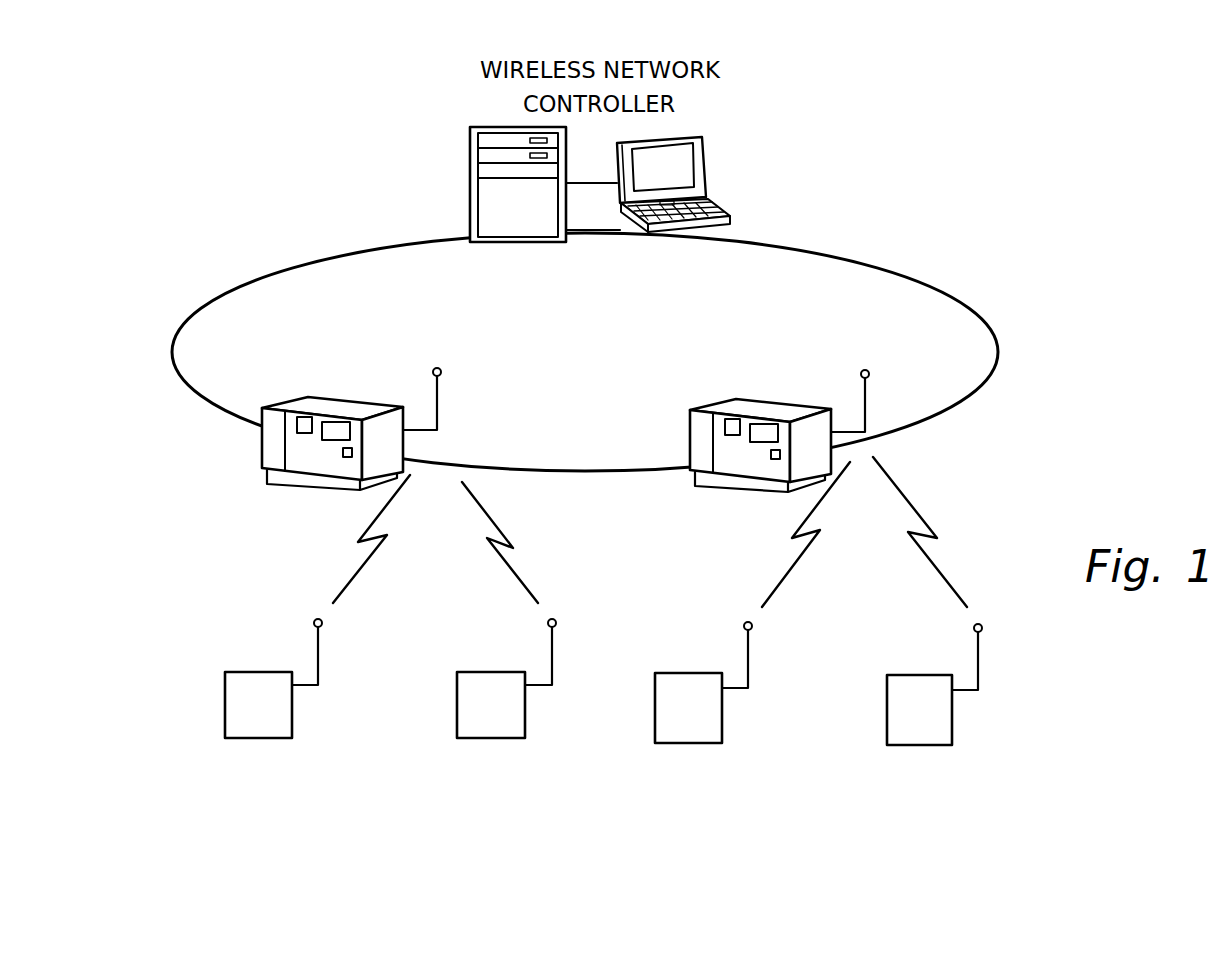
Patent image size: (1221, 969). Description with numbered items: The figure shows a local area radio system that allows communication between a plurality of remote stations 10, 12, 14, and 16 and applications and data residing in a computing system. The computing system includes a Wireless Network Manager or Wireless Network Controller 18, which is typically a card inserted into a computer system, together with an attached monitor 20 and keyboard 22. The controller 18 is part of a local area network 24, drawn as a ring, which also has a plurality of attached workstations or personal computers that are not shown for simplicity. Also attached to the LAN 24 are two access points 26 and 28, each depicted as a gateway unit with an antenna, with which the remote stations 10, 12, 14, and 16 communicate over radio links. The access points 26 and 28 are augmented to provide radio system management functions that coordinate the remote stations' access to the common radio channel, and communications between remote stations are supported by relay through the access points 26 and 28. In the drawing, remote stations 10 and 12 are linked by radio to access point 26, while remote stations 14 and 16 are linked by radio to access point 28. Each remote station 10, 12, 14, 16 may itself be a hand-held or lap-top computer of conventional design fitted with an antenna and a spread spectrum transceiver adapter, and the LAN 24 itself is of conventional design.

The remote station 10 is at (249, 640).
The remote station 12 is at (482, 640).
The remote station 14 is at (679, 641).
The remote station 16 is at (911, 642).
The wireless network controller 18 is at (470, 165).
The monitor 20 is at (704, 163).
The keyboard 22 is at (722, 198).
The local area network 24 is at (292, 263).
The access point 26 is at (320, 407).
The access point 28 is at (750, 409).